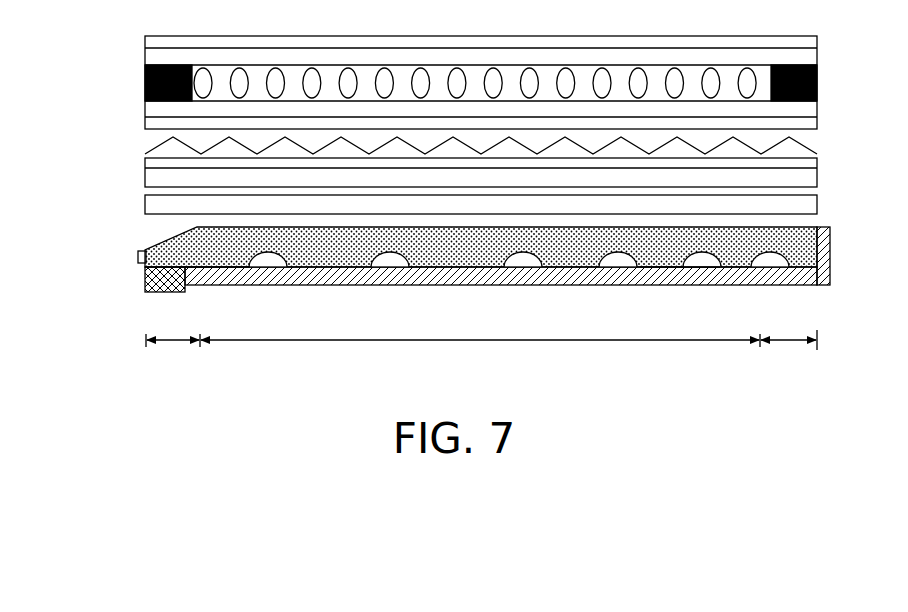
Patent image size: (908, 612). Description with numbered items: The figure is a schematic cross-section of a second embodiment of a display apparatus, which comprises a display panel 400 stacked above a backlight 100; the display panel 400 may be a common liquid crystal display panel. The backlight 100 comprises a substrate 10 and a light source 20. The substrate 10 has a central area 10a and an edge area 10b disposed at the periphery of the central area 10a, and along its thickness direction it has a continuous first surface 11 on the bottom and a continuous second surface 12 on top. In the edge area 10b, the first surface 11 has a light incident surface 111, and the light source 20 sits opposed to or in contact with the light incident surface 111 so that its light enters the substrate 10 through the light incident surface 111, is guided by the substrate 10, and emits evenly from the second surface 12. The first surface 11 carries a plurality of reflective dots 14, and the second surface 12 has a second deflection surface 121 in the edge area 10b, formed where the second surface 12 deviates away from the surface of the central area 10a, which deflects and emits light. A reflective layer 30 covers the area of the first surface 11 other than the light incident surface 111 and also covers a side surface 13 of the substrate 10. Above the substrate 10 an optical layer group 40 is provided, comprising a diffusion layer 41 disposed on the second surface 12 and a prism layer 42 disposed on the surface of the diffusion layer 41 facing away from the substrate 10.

The display panel 400 is at (82, 40).
The backlight 100 is at (82, 143).
The optical layer group 40 is at (484, 173).
The prism layer 42 is at (149, 181).
The diffusion layer 41 is at (149, 210).
The second surface 12 is at (481, 277).
The second deflection surface 121 is at (152, 240).
The light incident surface 111 is at (158, 268).
The light source 20 is at (165, 292).
The reflective layer 30 is at (240, 278).
The substrate 10 is at (447, 286).
The first surface 11 is at (678, 271).
The reflective dots 14 is at (703, 259).
The side surface 13 is at (813, 256).
The central area 10a is at (480, 353).
The edge area 10b is at (481, 348).